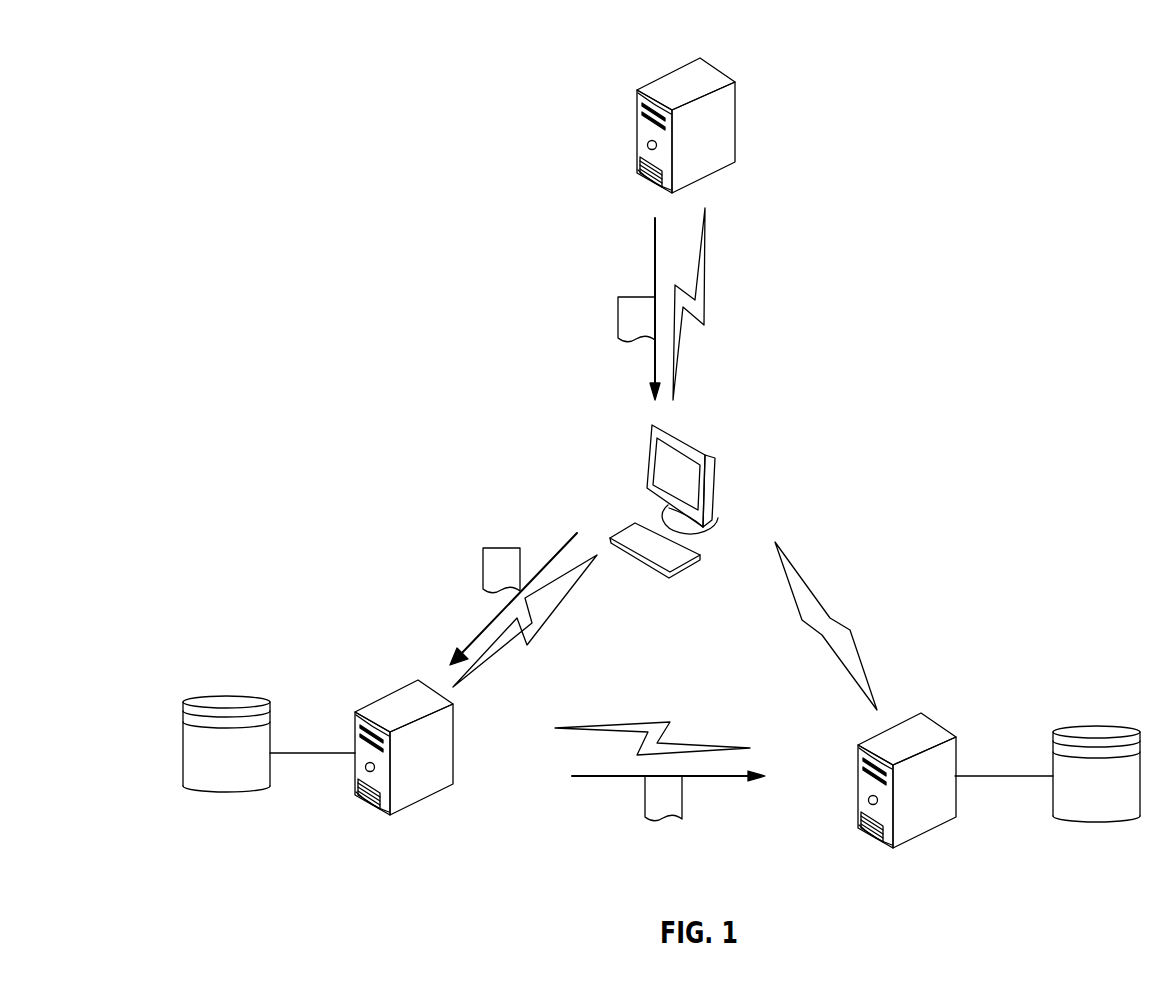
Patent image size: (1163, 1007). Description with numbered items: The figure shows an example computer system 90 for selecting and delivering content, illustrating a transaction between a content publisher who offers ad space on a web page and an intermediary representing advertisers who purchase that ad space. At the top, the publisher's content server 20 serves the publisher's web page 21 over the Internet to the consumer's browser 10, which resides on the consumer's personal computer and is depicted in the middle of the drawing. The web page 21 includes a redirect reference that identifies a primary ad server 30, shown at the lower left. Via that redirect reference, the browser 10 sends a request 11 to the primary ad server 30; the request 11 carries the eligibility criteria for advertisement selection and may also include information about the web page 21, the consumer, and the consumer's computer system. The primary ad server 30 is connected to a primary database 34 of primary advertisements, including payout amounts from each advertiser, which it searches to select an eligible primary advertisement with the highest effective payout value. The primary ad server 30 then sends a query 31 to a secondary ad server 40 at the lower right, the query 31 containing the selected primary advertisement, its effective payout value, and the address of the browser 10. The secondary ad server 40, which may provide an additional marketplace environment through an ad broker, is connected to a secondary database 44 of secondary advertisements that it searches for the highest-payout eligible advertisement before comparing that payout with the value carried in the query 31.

The computer system 90 is at (437, 140).
The content server 20 is at (735, 128).
The web page 21 is at (618, 315).
The browser 10 is at (717, 475).
The request 11 is at (483, 572).
The primary ad server 30 is at (388, 693).
The query 31 is at (662, 818).
The primary database 34 is at (225, 696).
The secondary ad server 40 is at (940, 725).
The secondary database 44 is at (1100, 726).